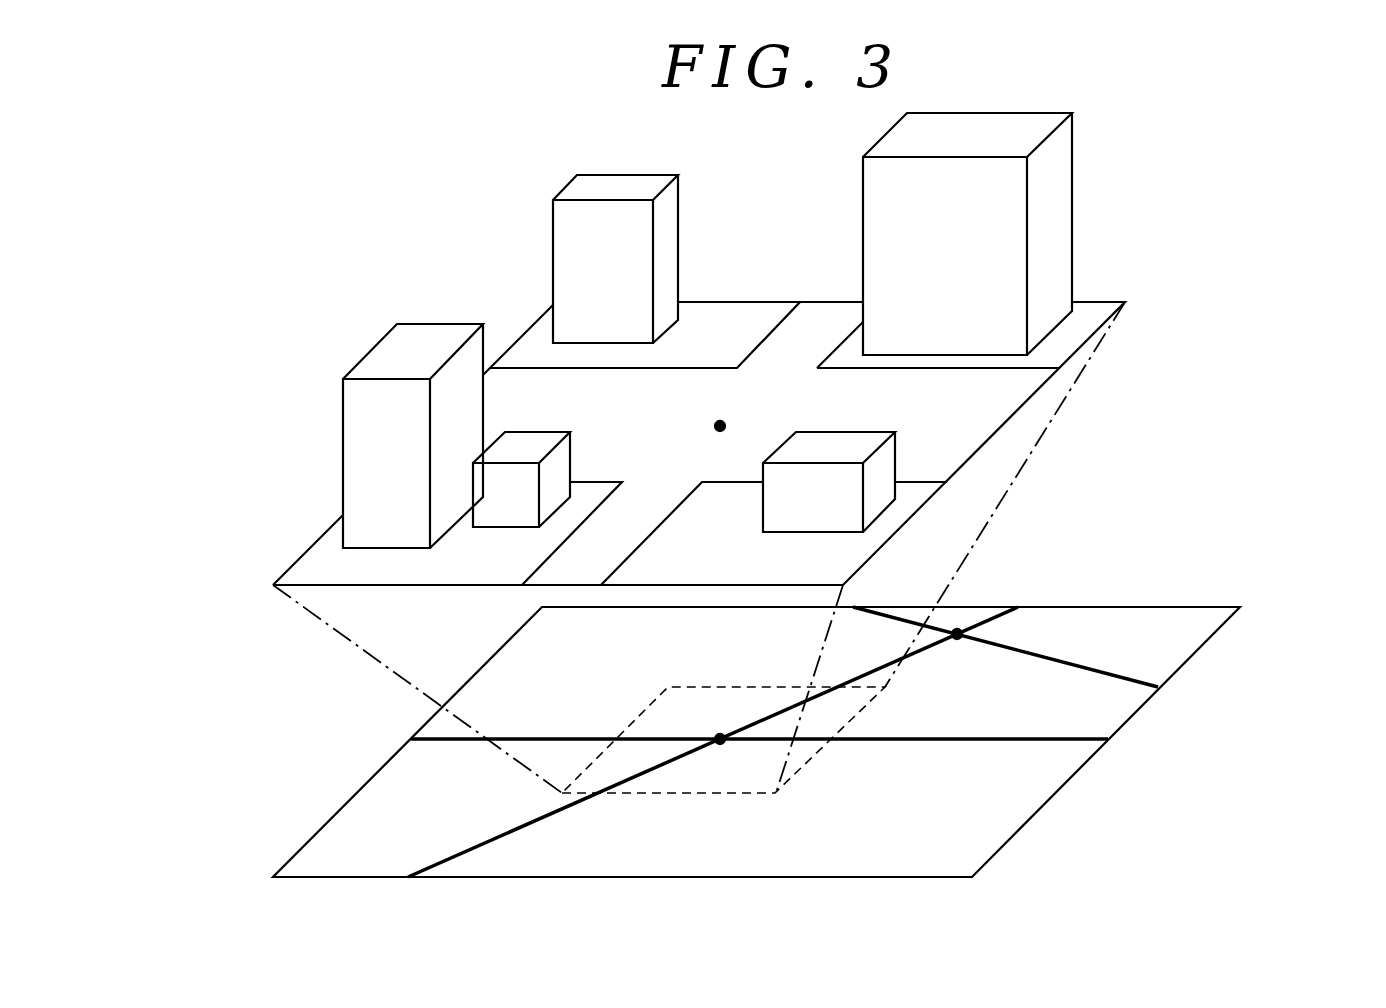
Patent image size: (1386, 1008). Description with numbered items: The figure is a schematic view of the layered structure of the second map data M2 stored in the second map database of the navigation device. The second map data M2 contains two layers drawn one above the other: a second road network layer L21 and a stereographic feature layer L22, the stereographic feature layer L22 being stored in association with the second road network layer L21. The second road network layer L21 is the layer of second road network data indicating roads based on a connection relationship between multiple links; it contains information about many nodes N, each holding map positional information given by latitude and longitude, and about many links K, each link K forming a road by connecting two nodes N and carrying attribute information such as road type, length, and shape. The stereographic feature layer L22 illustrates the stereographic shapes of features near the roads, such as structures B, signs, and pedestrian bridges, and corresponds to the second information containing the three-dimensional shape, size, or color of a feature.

The second map data M2 is at (1178, 240).
The stereographic feature layer L22 is at (323, 533).
The second road network layer L21 is at (361, 787).
The structure B is at (363, 423).
The link K is at (776, 712).
The node N is at (716, 415).